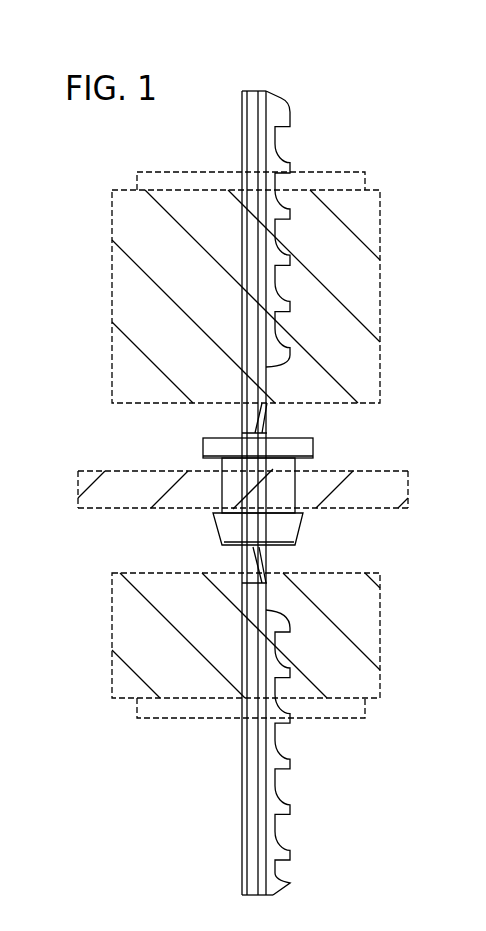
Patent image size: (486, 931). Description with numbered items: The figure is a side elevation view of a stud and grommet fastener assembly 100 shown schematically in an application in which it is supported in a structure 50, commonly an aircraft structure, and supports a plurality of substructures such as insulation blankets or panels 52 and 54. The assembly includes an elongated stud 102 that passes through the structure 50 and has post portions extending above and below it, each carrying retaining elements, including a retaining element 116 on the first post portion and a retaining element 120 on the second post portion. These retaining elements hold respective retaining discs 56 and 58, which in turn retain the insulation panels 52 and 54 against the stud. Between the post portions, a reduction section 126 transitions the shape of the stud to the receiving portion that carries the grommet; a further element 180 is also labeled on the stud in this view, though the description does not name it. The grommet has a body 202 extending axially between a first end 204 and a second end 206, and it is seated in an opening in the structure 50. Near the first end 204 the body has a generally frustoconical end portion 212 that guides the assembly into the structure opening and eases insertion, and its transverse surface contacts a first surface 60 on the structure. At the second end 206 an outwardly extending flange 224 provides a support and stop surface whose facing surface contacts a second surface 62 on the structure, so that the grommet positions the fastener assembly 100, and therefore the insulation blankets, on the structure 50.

The fastener assembly 100 is at (310, 97).
The stud 102 is at (306, 835).
The structure 50 is at (397, 470).
The insulation blanket or panel 52 is at (380, 627).
The insulation blanket or panel 54 is at (381, 290).
The retaining disc 56 is at (340, 720).
The retaining disc 58 is at (357, 172).
The first surface 60 is at (100, 508).
The second surface 62 is at (102, 472).
The body 202 is at (220, 463).
The first end 204 is at (290, 547).
The second end 206 is at (299, 432).
The frustoconical end portion 212 is at (207, 541).
The flange 224 is at (215, 437).
The retaining element 116 is at (0, 826).
The retaining element 120 is at (9, 418).
The reduction section 126 is at (9, 586).
The element 180 is at (9, 660).